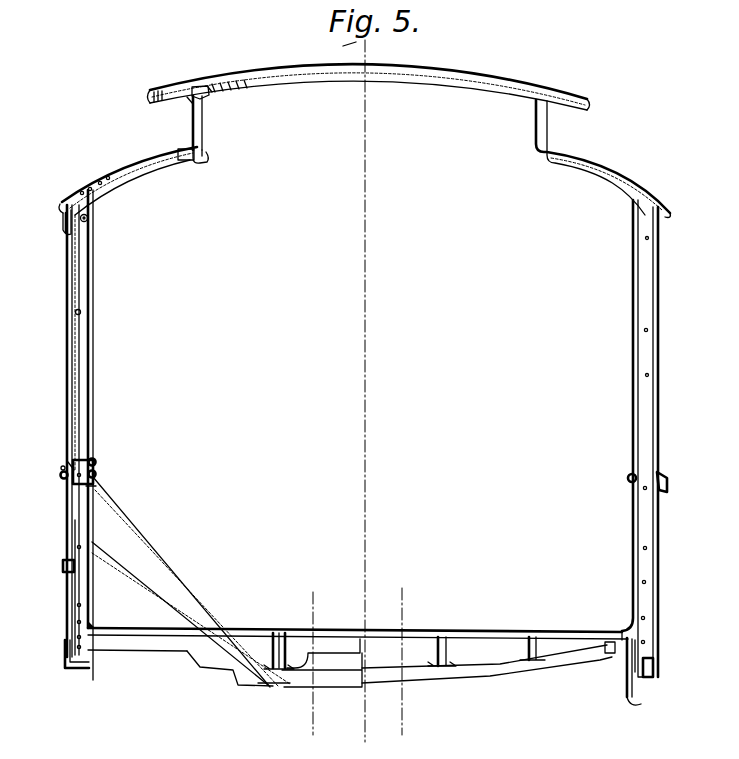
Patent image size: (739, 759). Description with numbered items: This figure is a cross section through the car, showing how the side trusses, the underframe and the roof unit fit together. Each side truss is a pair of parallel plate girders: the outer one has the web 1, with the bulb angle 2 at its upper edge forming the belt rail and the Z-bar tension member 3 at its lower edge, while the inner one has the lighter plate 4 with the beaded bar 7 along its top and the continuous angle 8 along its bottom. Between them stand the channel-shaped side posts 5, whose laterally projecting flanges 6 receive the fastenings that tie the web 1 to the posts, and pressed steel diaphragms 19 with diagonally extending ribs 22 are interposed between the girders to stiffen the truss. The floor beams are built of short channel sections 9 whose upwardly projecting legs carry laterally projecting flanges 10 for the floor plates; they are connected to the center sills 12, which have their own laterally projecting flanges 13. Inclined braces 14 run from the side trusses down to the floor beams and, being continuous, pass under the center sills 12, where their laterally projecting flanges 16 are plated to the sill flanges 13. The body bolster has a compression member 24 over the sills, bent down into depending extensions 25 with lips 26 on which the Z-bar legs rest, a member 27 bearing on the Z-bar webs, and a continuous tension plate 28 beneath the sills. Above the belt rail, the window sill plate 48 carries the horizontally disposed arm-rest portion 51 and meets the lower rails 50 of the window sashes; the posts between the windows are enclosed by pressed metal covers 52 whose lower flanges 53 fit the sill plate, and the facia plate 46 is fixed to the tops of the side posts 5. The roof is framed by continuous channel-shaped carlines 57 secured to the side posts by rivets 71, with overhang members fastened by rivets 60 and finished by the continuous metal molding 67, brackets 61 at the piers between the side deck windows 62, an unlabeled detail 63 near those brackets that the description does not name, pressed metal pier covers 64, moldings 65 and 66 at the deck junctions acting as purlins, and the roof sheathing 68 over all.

The web of the plate girder 1 is at (65, 602).
The bulb angle 2 is at (60, 477).
The tension member 3 is at (67, 661).
The plate 4 is at (94, 539).
The side posts 5 is at (631, 410).
The laterally projecting flanges 6 is at (314, 662).
The beaded bar or flanged member 7 is at (100, 465).
The continuous angle 8 is at (95, 626).
The channel-shaped sections 9 is at (264, 668).
The laterally projecting flange 10 is at (358, 641).
The center sills 12 is at (279, 632).
The laterally projecting flange 13 is at (283, 688).
The inclined braces 14 is at (166, 563).
The laterally projecting flanges 16 is at (342, 688).
The pressed steel diaphragms 19 is at (77, 583).
The diagonally extending ribs 22 is at (69, 531).
The compression member 24 is at (577, 641).
The depending extensions 25 is at (622, 683).
The lips 26 is at (634, 702).
The member 27 is at (642, 647).
The continuous plate 28 is at (480, 677).
The facia plate or letter-board 46 is at (64, 223).
The window sill plate or flasher 48 is at (62, 472).
The lower rails of the window sashes 50 is at (90, 458).
The horizontally disposed portion 51 is at (96, 460).
The pressed metal covers 52 is at (69, 326).
The flanges 53 is at (70, 466).
The carlines 57 is at (328, 82).
The rivets 60 is at (244, 84).
The brackets 61 is at (206, 99).
The ventilators or windows of the side deck 62 is at (204, 140).
The bolt 63 is at (192, 101).
The pressed metal pier covers 64 is at (180, 150).
The metal molding 65 is at (212, 90).
The metal molding 66 is at (207, 162).
The continuous metal molding 67 is at (148, 97).
The roof sheathing 68 is at (268, 68).
The rivets 71 is at (101, 187).